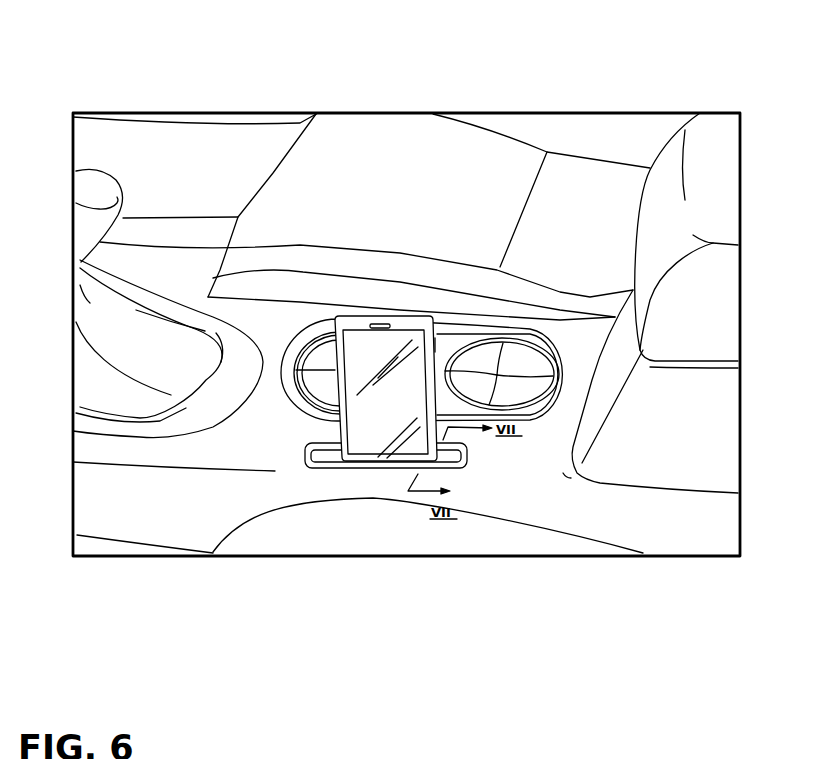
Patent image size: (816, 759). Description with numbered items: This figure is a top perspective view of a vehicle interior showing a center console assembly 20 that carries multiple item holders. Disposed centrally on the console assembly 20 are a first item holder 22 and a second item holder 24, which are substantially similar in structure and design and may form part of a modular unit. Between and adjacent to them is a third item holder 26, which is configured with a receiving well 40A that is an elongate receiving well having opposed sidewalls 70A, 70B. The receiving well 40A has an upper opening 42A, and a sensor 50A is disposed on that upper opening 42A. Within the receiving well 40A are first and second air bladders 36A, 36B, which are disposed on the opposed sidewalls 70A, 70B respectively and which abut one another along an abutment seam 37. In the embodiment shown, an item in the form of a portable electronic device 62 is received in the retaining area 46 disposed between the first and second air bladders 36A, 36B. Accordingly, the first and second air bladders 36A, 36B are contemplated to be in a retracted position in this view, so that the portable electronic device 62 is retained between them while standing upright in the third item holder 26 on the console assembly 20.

The console assembly 20 is at (172, 490).
The first item holder 22 is at (295, 333).
The second item holder 24 is at (543, 335).
The third item holder 26 is at (295, 463).
The first air bladder 36A is at (450, 470).
The second air bladder 36B is at (467, 442).
The abutment seam 37 is at (310, 453).
The receiving well 40A is at (460, 482).
The upper opening 42A is at (317, 442).
The retaining area 46 is at (366, 472).
The sensor 50A is at (462, 456).
The portable electronic device 62 is at (385, 311).
The first sidewall 70A is at (393, 468).
The second sidewall 70B is at (333, 443).